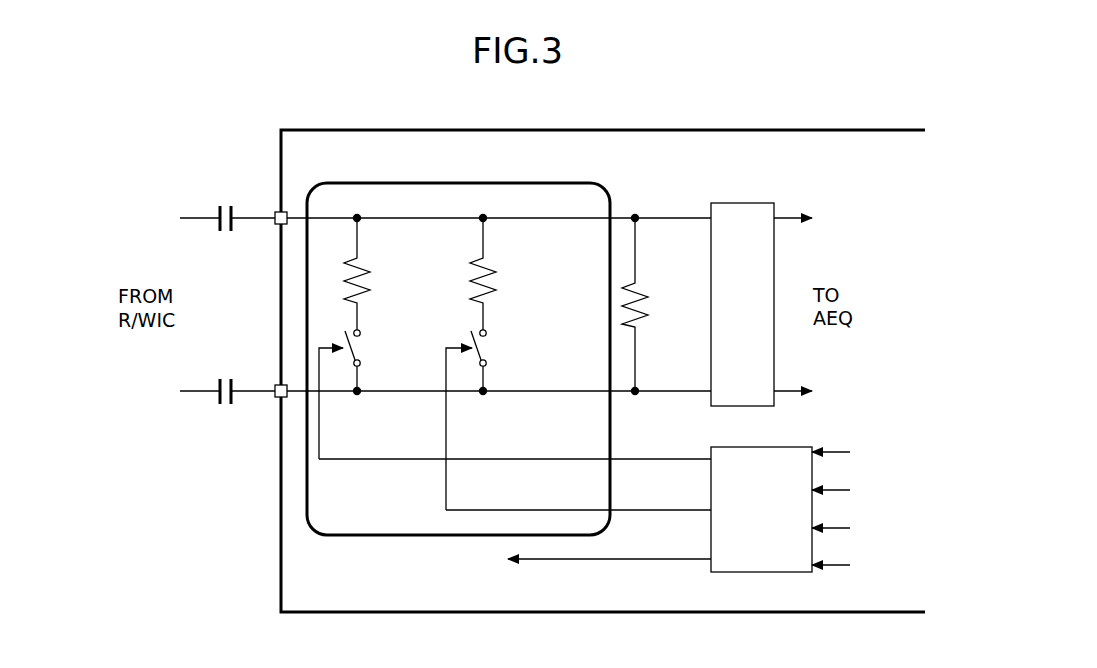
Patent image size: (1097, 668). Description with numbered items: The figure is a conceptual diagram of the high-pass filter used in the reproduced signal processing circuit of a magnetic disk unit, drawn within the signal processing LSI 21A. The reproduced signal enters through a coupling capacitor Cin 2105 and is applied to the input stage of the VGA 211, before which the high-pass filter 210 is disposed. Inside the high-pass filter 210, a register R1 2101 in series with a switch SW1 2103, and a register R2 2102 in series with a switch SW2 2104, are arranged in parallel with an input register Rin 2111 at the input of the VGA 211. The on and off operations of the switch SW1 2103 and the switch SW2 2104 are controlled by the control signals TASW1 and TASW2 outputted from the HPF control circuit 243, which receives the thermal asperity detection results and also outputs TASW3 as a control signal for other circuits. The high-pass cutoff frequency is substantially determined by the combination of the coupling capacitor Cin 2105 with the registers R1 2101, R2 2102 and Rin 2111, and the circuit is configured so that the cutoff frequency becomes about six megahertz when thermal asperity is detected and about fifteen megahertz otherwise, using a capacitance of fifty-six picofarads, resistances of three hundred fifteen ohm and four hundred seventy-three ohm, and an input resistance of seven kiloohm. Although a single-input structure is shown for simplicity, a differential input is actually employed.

The signal processing LSI 21A is at (800, 130).
The coupling capacitor Cin 2105 is at (223, 176).
The high-pass filter 210 is at (480, 166).
The register R1 2101 is at (374, 251).
The register R2 2102 is at (500, 251).
The switch SW1 2103 is at (374, 322).
The switch SW2 2104 is at (496, 322).
The input register Rin 2111 is at (670, 290).
The VGA 211 is at (740, 203).
The HPF control circuit 243 is at (745, 447).